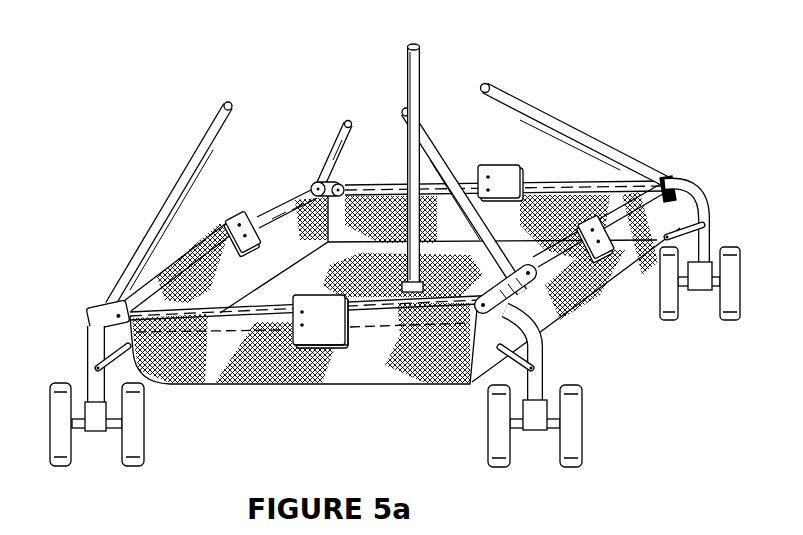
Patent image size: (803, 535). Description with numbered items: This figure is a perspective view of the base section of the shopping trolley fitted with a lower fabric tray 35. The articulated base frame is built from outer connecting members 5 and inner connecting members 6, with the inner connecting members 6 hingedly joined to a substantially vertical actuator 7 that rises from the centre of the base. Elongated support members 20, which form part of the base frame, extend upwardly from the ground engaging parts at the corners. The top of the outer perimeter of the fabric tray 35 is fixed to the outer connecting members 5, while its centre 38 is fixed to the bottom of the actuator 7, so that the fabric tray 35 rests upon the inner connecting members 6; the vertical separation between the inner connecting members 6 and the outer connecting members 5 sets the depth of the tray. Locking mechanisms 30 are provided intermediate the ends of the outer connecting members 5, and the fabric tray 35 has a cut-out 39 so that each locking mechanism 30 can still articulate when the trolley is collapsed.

The outer connecting members 5 is at (290, 335).
The inner connecting members 6 is at (522, 357).
The actuator 7 is at (422, 66).
The elongated support members 20 is at (187, 172).
The locking mechanisms 30 is at (232, 232).
The fabric tray 35 is at (245, 362).
The centre 38 is at (405, 283).
The cut-out 39 is at (313, 345).